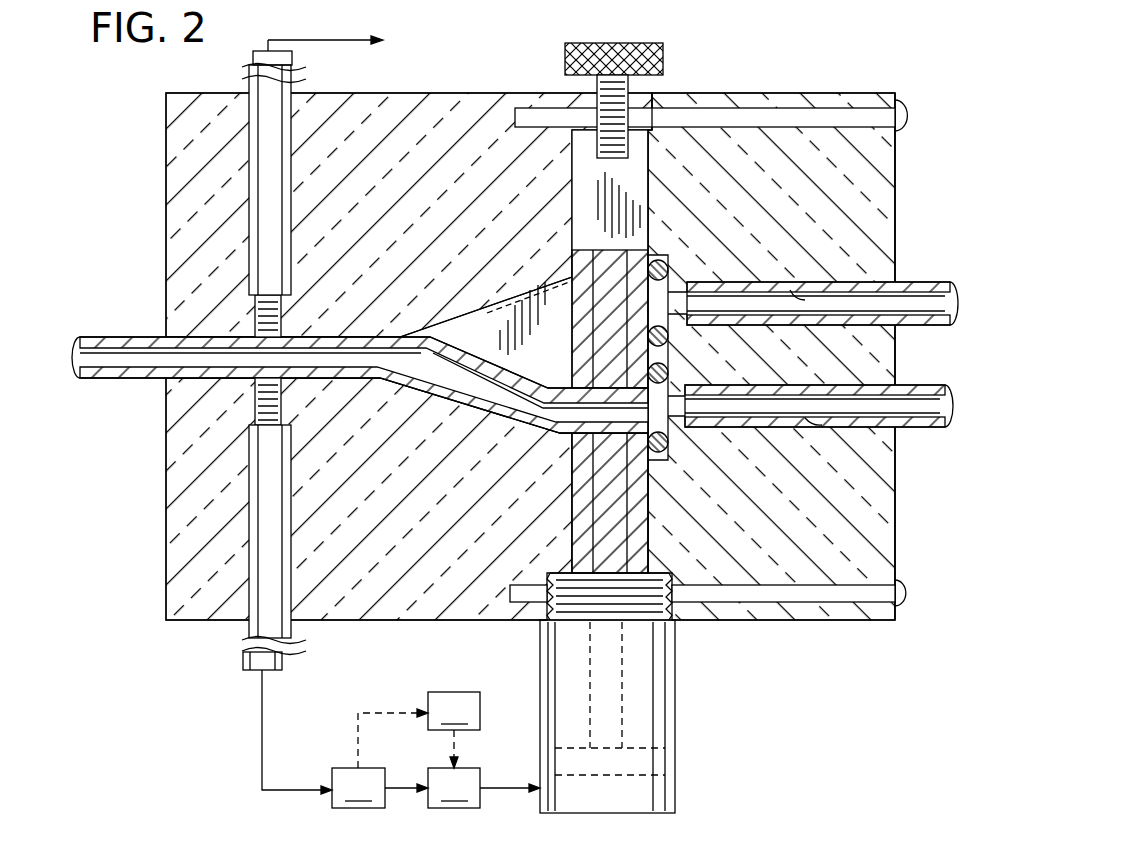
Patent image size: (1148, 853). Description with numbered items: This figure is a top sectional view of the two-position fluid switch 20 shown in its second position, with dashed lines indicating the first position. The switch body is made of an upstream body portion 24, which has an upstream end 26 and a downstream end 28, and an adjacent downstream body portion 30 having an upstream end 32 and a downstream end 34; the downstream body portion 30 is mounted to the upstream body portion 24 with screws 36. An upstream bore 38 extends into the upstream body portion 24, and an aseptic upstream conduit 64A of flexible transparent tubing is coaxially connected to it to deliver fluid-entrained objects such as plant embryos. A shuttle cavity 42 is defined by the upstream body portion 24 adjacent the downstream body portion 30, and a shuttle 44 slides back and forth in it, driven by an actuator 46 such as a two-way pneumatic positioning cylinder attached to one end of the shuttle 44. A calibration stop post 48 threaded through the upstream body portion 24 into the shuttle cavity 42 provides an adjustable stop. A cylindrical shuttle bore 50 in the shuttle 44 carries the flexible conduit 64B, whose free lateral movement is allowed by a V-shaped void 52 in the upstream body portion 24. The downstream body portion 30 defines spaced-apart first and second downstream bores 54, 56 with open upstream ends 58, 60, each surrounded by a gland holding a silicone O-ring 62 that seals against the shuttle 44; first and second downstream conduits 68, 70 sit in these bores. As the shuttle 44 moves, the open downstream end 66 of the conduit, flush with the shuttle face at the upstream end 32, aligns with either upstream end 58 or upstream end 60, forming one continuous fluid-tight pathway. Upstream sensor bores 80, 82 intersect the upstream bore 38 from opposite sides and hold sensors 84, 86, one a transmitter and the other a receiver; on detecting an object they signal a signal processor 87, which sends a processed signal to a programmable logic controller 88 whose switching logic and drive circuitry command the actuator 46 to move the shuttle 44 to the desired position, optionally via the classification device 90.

The two-position fluid switch 20 is at (148, 102).
The upstream body portion 24 is at (163, 172).
The upstream end of upstream body portion 26 is at (163, 234).
The downstream end of upstream body portion 28 is at (660, 118).
The downstream body portion 30 is at (902, 172).
The upstream end of downstream body portion 32 is at (650, 192).
The downstream end of downstream body portion 34 is at (897, 207).
The screws 36 is at (818, 102).
The upstream bore 38 is at (220, 382).
The shuttle cavity 42 is at (570, 225).
The shuttle 44 is at (656, 505).
The actuator 46 is at (678, 733).
The calibration stop post 48 is at (597, 152).
The shuttle bore 50 is at (540, 425).
The V-shaped void 52 is at (465, 322).
The first downstream bore 54 is at (810, 302).
The second downstream bore 56 is at (815, 428).
The upstream end of first downstream bore 58 is at (690, 284).
The upstream end of second downstream bore 60 is at (690, 388).
The O-ring 62 is at (666, 262).
The upstream conduit 64A is at (114, 336).
The flexible conduit 64B is at (465, 446).
The downstream end of upstream conduit 66 is at (613, 385).
The first downstream conduit 68 is at (945, 283).
The second downstream conduit 70 is at (915, 428).
The upstream sensor bore 80 is at (262, 136).
The upstream sensor bore 82 is at (258, 612).
The sensor 84 is at (298, 70).
The sensor 86 is at (284, 665).
The signal processor 87 is at (345, 739).
The programmable logic controller 88 is at (484, 788).
The input device 90 is at (419, 730).